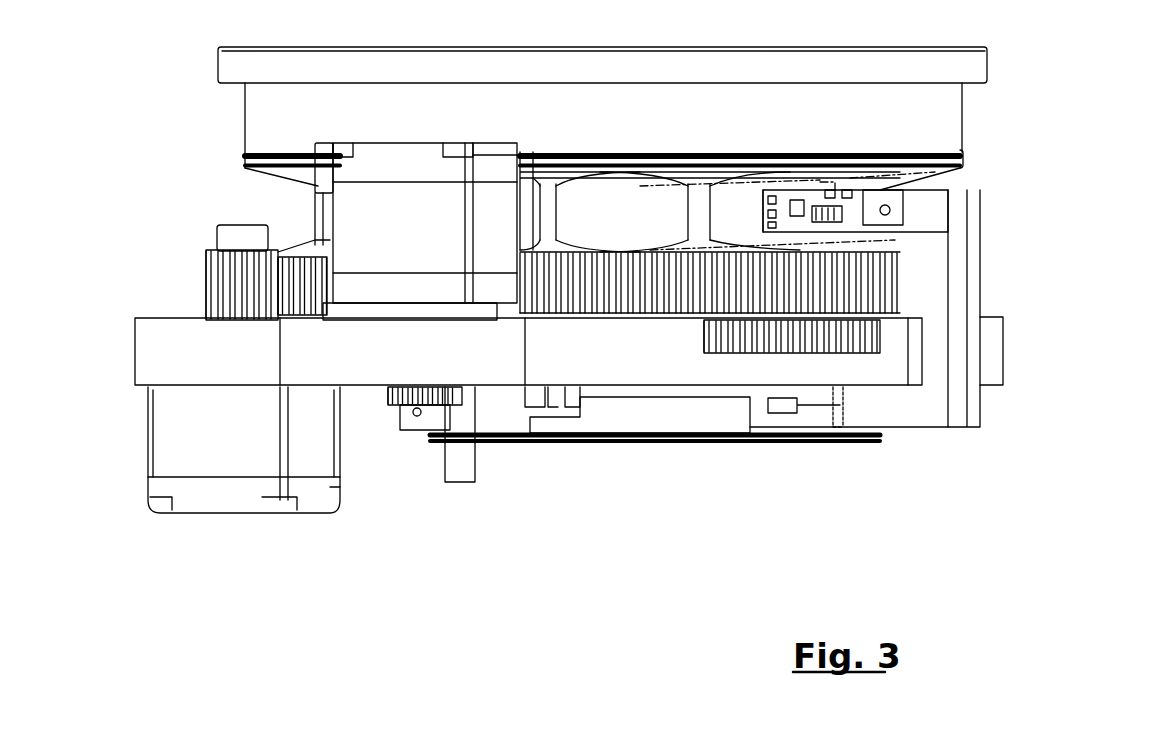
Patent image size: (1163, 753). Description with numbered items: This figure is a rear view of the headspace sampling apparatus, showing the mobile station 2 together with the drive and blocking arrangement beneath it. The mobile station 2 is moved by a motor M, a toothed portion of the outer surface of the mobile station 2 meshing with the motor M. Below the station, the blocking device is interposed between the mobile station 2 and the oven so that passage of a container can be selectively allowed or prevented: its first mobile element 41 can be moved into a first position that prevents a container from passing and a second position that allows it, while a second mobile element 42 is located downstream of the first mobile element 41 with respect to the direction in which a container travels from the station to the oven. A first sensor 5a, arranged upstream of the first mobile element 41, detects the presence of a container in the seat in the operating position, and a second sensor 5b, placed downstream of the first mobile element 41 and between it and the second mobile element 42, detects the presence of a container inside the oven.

The mobile station 2 is at (925, 136).
The first sensor 5a is at (880, 222).
The first mobile element 41 is at (858, 364).
The second sensor 5b is at (840, 405).
The second mobile element 42 is at (850, 445).
The motor M is at (214, 497).